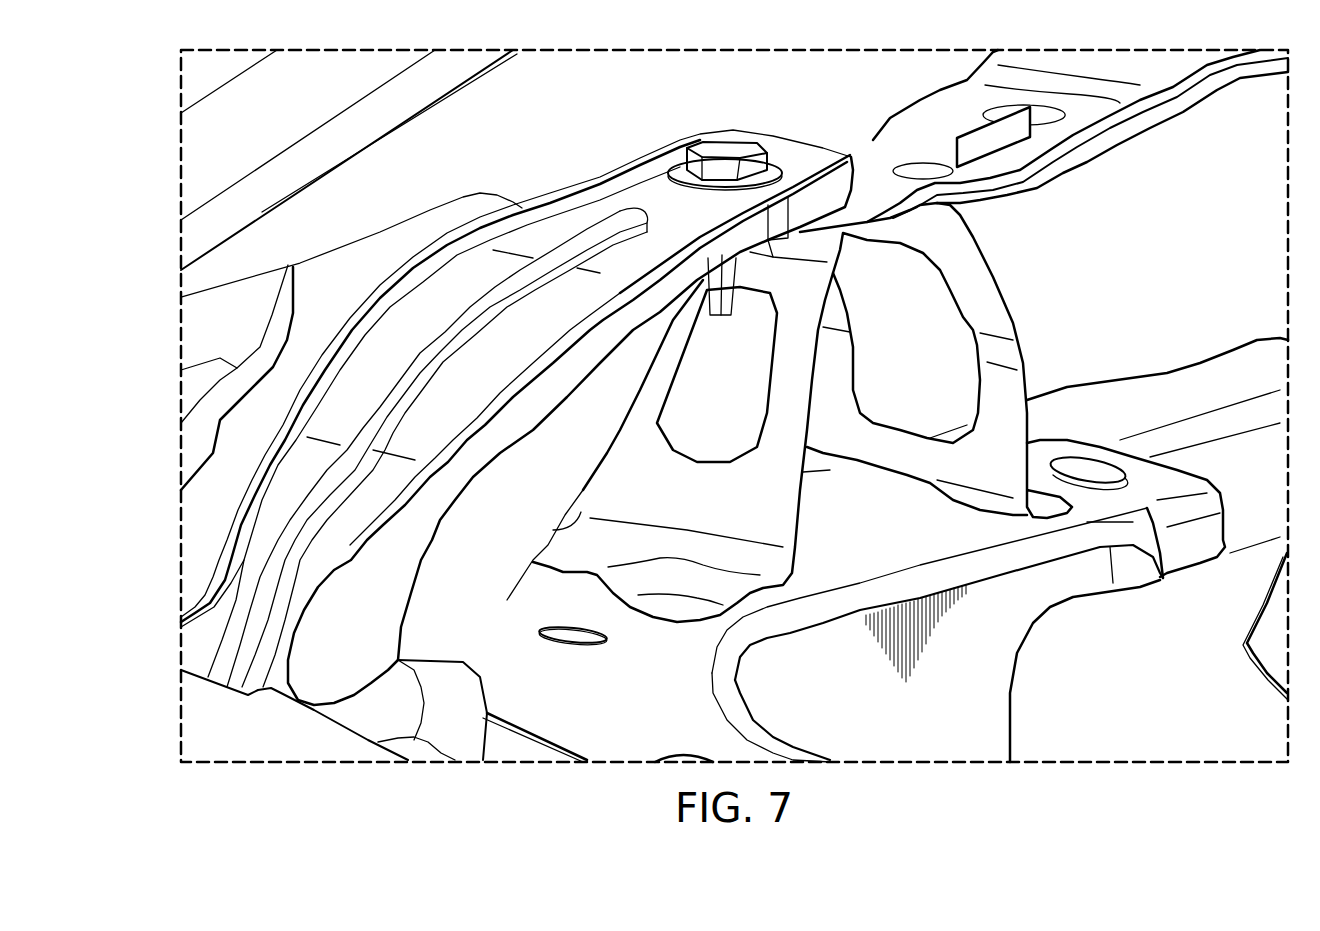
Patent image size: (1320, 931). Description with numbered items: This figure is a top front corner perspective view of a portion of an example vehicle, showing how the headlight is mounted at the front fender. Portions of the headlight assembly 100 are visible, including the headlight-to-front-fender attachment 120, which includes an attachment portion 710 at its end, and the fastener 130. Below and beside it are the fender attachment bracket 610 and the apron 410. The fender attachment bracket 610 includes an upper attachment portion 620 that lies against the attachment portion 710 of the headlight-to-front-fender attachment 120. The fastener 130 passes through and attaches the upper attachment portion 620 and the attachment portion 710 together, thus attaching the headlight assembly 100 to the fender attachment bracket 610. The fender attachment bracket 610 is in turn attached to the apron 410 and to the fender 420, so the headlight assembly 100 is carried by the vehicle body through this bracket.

The headlight assembly 100 is at (587, 143).
The headlight-to-front-fender attachment 120 is at (557, 203).
The fastener 130 is at (737, 147).
The attachment portion 710 is at (689, 127).
The fender attachment bracket 610 is at (997, 292).
The upper attachment portion 620 is at (807, 237).
The apron 410 is at (1007, 633).
The fender 420 is at (1197, 380).